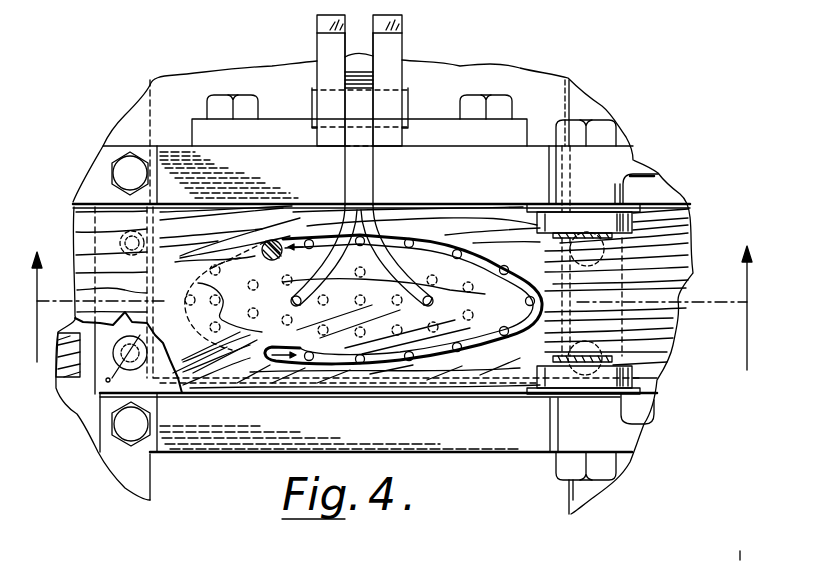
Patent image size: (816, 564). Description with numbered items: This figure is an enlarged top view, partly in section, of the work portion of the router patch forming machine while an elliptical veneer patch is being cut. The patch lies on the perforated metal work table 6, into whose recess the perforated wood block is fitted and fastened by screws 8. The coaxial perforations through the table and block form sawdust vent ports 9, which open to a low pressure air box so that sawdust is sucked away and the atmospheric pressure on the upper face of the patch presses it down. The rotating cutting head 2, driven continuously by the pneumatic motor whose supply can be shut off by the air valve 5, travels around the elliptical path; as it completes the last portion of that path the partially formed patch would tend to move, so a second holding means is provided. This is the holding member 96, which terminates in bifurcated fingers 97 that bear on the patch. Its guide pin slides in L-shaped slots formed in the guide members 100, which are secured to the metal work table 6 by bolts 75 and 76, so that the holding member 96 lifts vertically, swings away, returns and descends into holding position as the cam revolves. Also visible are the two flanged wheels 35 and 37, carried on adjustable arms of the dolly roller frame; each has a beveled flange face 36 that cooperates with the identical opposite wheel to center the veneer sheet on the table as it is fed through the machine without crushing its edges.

The cutting head 2 is at (279, 241).
The air valve 5 is at (390, 308).
The metal work table 6 is at (529, 155).
The screws 8 is at (122, 362).
The sawdust vent ports 9 is at (363, 301).
The flanged wheel 35 is at (600, 382).
The beveled flange face 36 is at (546, 208).
The flanged wheel 37 is at (599, 152).
The bolt 75 is at (219, 108).
The bolt 76 is at (484, 101).
The holding member 96 is at (366, 176).
The bifurcated fingers 97 is at (361, 308).
The guide members 100 is at (322, 46).